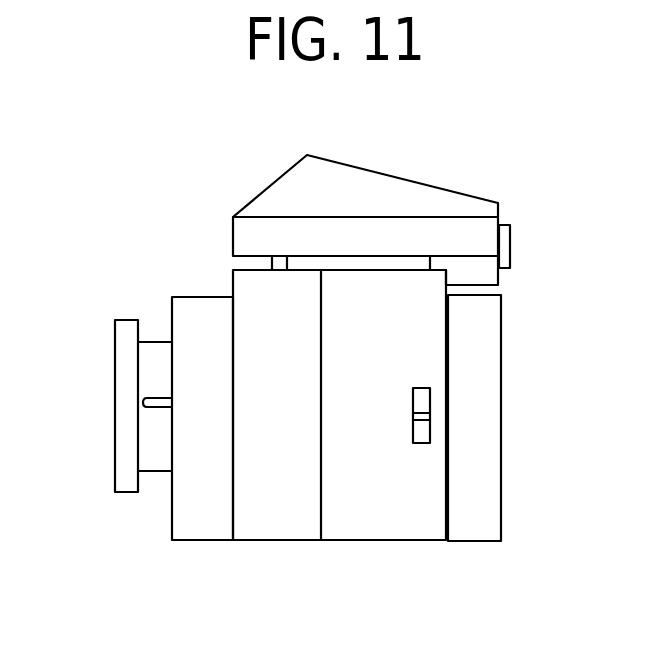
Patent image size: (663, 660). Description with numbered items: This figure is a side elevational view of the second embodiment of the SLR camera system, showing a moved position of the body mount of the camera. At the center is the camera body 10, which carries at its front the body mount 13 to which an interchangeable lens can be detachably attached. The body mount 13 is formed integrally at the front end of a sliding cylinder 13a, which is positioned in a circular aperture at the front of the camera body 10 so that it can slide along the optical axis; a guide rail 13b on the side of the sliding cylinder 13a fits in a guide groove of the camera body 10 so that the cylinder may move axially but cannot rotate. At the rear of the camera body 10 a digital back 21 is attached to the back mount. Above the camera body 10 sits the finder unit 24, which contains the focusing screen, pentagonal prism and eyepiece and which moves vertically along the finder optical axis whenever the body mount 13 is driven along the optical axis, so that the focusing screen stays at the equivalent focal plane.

The camera body 10 is at (300, 531).
The body mount 13 is at (120, 335).
The sliding cylinder 13a is at (155, 358).
The guide rail 13b is at (158, 407).
The digital back 21 is at (487, 532).
The finder unit 24 is at (447, 197).